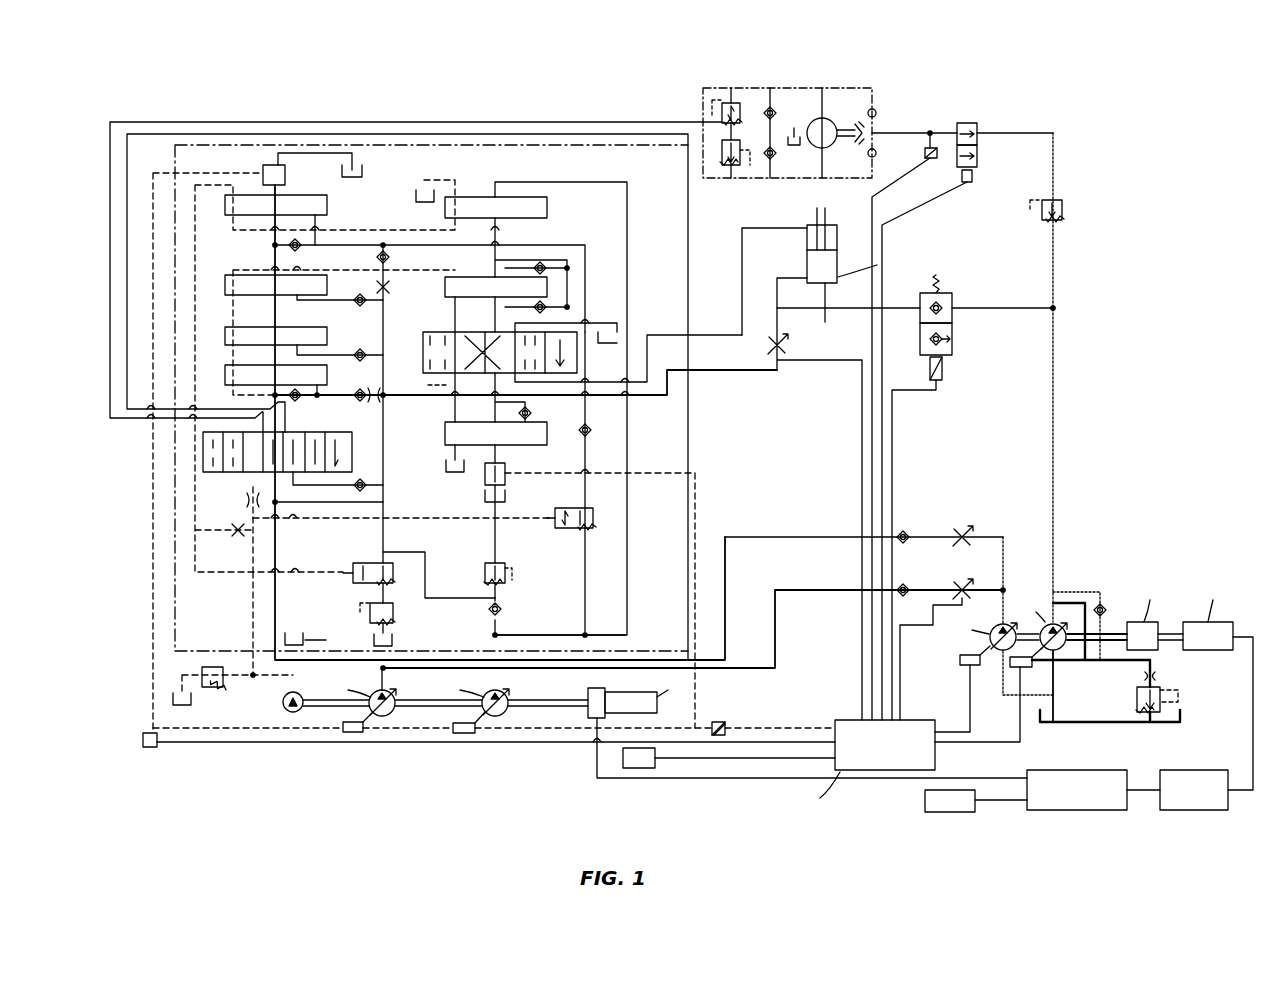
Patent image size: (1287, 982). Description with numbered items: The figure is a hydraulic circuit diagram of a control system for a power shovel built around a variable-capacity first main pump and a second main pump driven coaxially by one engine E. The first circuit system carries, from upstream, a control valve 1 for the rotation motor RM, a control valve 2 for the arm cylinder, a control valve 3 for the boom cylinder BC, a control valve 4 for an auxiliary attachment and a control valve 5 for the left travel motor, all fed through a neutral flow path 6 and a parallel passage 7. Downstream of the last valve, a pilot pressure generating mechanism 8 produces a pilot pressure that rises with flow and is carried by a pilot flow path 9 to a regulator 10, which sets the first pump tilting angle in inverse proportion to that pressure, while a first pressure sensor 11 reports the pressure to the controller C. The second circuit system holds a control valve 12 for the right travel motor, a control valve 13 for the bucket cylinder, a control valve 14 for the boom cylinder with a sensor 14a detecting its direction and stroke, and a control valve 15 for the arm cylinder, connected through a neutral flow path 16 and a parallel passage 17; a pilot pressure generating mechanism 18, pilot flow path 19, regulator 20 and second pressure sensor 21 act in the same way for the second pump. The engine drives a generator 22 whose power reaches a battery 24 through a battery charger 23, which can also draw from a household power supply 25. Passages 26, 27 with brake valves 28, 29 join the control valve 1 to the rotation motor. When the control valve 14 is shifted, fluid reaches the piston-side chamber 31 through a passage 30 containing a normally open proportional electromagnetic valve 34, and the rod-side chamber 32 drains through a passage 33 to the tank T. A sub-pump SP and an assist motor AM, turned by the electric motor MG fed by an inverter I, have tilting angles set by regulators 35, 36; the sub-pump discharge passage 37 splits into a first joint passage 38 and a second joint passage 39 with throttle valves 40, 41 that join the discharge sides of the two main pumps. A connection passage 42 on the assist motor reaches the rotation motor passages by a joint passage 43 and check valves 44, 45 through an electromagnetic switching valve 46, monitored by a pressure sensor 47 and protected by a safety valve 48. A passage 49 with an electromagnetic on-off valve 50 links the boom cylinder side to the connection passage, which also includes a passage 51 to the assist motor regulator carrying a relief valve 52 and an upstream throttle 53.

The control valve 1 is at (205, 470).
The control valve 2 is at (225, 365).
The control valve 3 is at (225, 327).
The control valve 4 is at (225, 275).
The control valve 5 is at (225, 215).
The neutral flow path 6 is at (263, 196).
The parallel passage 7 is at (388, 432).
The pilot pressure generating mechanism 8 is at (270, 164).
The pilot flow path 9 is at (150, 528).
The regulator 10 is at (357, 734).
The first pressure sensor 11 is at (150, 748).
The control valve 12 is at (548, 198).
The control valve 13 is at (548, 283).
The control valve 14 is at (577, 372).
The sensor 14a is at (638, 770).
The control valve 15 is at (548, 443).
The neutral flow path 16 is at (497, 455).
The parallel passage 17 is at (568, 307).
The pilot pressure generating mechanism 18 is at (507, 483).
The pilot flow path 19 is at (697, 503).
The regulator 20 is at (470, 735).
The second pressure sensor 21 is at (722, 724).
The generator 22 is at (590, 712).
The battery charger 23 is at (1093, 770).
The battery 24 is at (1207, 770).
The household power supply 25 is at (925, 800).
The passage 26 is at (797, 92).
The passage 27 is at (745, 180).
The brake valve 28 is at (722, 113).
The brake valve 29 is at (722, 158).
The passage 30 is at (728, 375).
The piston-side chamber 31 is at (825, 318).
The rod-side chamber 32 is at (815, 240).
The passage 33 is at (740, 282).
The proportional electromagnetic valve 34 is at (770, 347).
The regulator 35 is at (960, 664).
The regulator 36 is at (1032, 668).
The discharge passage 37 is at (1005, 605).
The first joint passage 38 is at (795, 592).
The second joint passage 39 is at (790, 535).
The first proportional electromagnetic throttle valve 40 is at (965, 590).
The second proportional electromagnetic throttle valve 41 is at (965, 533).
The connection passage 42 is at (1053, 372).
The joint passage 43 is at (1053, 170).
The check valve 44 is at (877, 112).
The check valve 45 is at (877, 153).
The electromagnetic switching valve 46 is at (977, 133).
The pressure sensor 47 is at (936, 147).
The safety valve 48 is at (1062, 218).
The passage 49 is at (915, 320).
The electromagnetic on-off valve 50 is at (953, 352).
The passage 51 is at (1068, 603).
The relief valve 52 is at (1160, 712).
The throttle 53 is at (1157, 674).